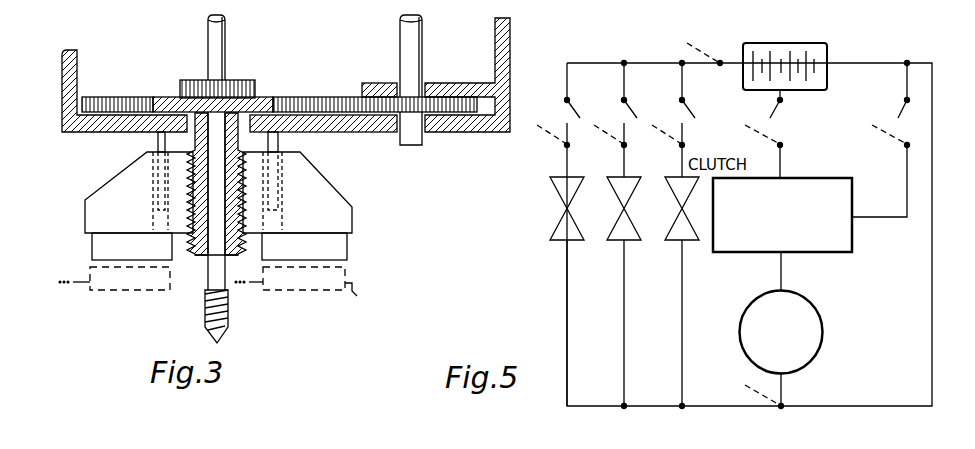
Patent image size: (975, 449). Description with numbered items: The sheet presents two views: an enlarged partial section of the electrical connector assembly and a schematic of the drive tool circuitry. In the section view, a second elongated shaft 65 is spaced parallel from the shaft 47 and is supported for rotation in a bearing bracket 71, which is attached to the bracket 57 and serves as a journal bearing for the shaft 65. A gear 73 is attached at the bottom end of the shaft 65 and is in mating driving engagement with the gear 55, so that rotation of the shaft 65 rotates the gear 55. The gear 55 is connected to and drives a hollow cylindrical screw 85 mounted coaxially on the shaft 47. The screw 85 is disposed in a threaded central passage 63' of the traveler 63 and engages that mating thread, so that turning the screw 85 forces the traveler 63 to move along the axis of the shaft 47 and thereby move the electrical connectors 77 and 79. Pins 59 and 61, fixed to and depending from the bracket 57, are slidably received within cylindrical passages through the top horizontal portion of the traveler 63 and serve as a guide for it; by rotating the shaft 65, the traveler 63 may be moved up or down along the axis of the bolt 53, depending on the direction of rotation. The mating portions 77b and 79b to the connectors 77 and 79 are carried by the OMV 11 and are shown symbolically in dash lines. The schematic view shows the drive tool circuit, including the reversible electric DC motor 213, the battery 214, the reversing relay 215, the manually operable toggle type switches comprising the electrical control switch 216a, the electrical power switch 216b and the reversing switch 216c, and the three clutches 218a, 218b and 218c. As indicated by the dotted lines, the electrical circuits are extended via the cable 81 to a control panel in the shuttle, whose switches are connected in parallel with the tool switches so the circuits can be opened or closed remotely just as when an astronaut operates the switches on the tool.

In FIG. 3, the OMV 11 is at (362, 298).
In FIG. 3, the shaft 47 is at (225, 46).
In FIG. 3, the bolt 53 is at (228, 305).
In FIG. 3, the gear 55 is at (141, 97).
In FIG. 3, the bracket 57 is at (59, 68).
In FIG. 3, the pin 59 is at (157, 144).
In FIG. 3, the pin 61 is at (279, 145).
In FIG. 3, the traveler 63 is at (301, 192).
In FIG. 3, the threaded central passage 63' is at (248, 261).
In FIG. 3, the second elongated shaft 65 is at (422, 47).
In FIG. 3, the bearing bracket 71 is at (380, 83).
In FIG. 3, the gear 73 is at (430, 133).
In FIG. 3, the electrical connector 77 is at (92, 250).
In FIG. 3, the mating portion 77b is at (157, 290).
In FIG. 3, the electrical connector 79 is at (347, 250).
In FIG. 3, the mating portion 79b is at (285, 292).
In FIG. 5, the cable 81 is at (903, 145).
In FIG. 3, the screw 85 is at (182, 262).
In FIG. 5, the reversible electric DC motor 213 is at (822, 321).
In FIG. 5, the battery 214 is at (788, 43).
In FIG. 5, the reversing relay 215 is at (852, 241).
In FIG. 5, the electrical control switch 216a is at (711, 69).
In FIG. 5, the electrical power switch 216b is at (772, 109).
In FIG. 5, the reversing switch 216c is at (896, 117).
In FIG. 5, the clutch 218a is at (619, 242).
In FIG. 5, the clutch 218b is at (560, 242).
In FIG. 5, the clutch 218c is at (677, 242).